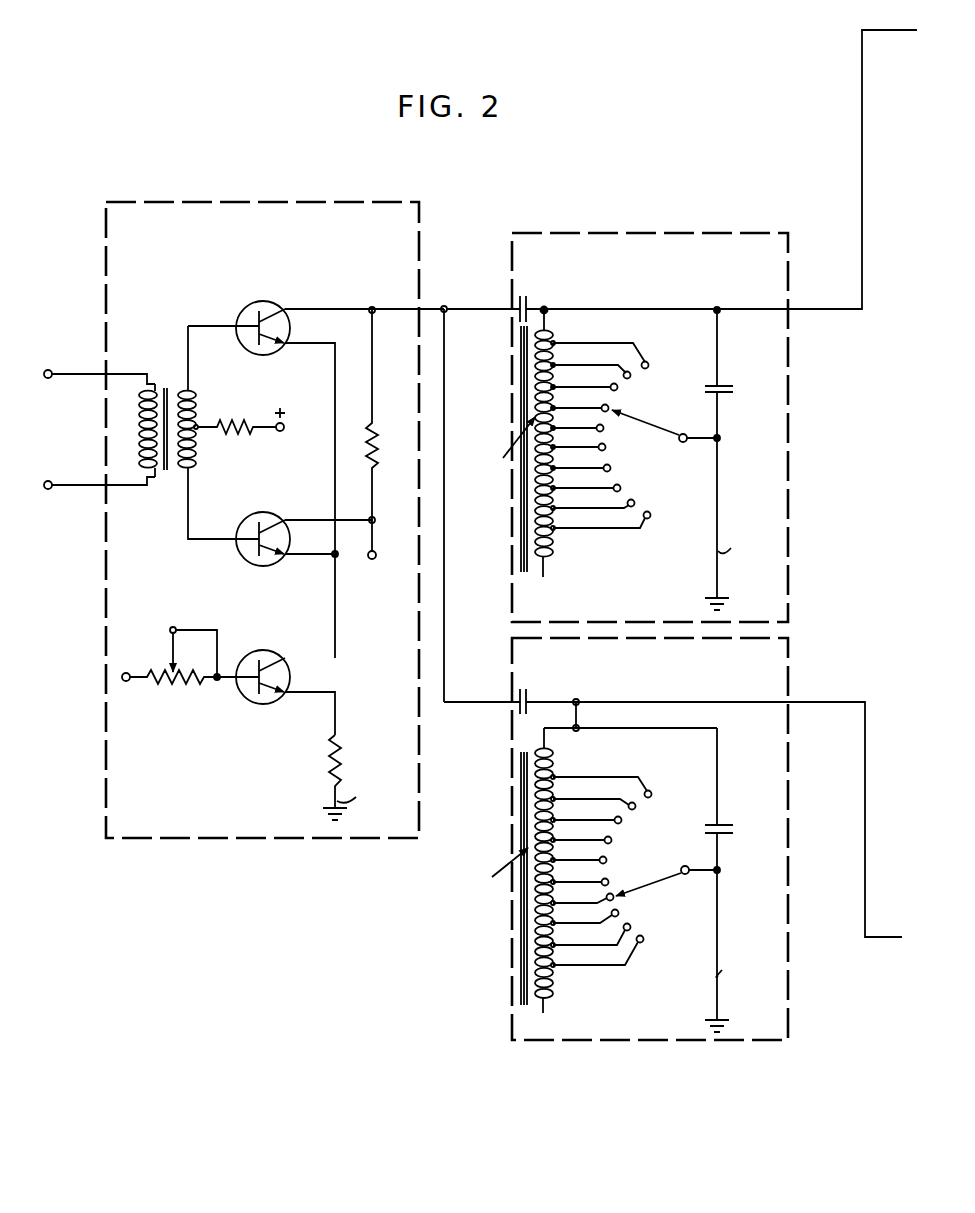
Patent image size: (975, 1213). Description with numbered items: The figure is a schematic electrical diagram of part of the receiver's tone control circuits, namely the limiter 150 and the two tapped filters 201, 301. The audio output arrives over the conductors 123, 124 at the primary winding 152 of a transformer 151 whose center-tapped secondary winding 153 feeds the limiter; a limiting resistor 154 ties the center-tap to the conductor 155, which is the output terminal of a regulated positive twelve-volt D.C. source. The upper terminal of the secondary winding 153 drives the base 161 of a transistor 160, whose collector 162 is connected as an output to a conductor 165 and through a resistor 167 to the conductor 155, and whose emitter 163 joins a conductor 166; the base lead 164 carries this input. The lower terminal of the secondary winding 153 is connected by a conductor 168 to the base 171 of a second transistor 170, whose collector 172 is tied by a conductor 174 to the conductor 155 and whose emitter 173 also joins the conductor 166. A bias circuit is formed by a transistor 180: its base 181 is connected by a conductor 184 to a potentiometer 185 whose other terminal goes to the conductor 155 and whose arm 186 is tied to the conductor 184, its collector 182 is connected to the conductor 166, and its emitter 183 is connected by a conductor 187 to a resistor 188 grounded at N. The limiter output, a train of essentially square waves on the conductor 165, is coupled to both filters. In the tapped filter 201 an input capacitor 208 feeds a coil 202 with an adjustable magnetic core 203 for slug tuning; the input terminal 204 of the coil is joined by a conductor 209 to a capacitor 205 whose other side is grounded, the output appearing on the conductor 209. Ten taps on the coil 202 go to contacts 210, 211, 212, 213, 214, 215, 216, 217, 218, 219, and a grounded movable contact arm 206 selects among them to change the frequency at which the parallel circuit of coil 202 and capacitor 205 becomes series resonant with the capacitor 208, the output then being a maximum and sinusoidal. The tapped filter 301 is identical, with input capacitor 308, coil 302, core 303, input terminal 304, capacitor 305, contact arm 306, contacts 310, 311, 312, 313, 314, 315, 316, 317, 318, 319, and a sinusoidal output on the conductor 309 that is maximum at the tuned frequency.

The conductor 123 is at (86, 362).
The conductor 124 is at (93, 488).
The limiter 150 is at (213, 198).
The transformer 151 is at (148, 411).
The primary winding 152 is at (139, 428).
The secondary winding 153 is at (204, 428).
The limiting resistor 154 is at (246, 436).
The conductor 155 is at (283, 432).
The transistor 160 is at (270, 309).
The base 161 is at (247, 321).
The collector 162 is at (282, 308).
The emitter 163 is at (288, 341).
The base lead 164 is at (192, 326).
The conductor 165 is at (407, 309).
The conductor 166 is at (335, 404).
The resistor 167 is at (380, 449).
The conductor 168 is at (184, 518).
The second transistor 170 is at (269, 535).
The base 171 is at (243, 556).
The collector 172 is at (290, 509).
The emitter 173 is at (288, 545).
The conductor 174 is at (320, 513).
The transistor 180 is at (276, 682).
The base 181 is at (246, 660).
The collector 182 is at (273, 657).
The emitter 183 is at (296, 681).
The conductor 184 is at (227, 687).
The potentiometer 185 is at (178, 689).
The arm 186 is at (170, 632).
The conductor 187 is at (335, 723).
The resistor 188 is at (362, 762).
The tapped filter 201 is at (579, 1028).
The coil 202 is at (537, 941).
The magnetic core 203 is at (521, 910).
The input terminal 204 is at (574, 727).
The capacitor 205 is at (728, 817).
The movable contact arm 206 is at (668, 878).
The input capacitor 208 is at (521, 690).
The conductor 209 is at (632, 728).
The contact 210 is at (651, 792).
The contact 211 is at (636, 806).
The contact 212 is at (622, 821).
The contact 213 is at (612, 841).
The contact 214 is at (607, 861).
The contact 215 is at (608, 883).
The contact 216 is at (614, 899).
The contact 217 is at (619, 915).
The contact 218 is at (631, 929).
The contact 219 is at (643, 942).
The tapped filter 301 is at (691, 231).
The coil 302 is at (536, 516).
The magnetic core 303 is at (521, 382).
The input terminal 304 is at (546, 312).
The capacitor 305 is at (727, 392).
The movable contact arm 306 is at (672, 434).
The input capacitor 308 is at (521, 301).
The conductor 309 is at (648, 310).
The contact 310 is at (648, 361).
The contact 311 is at (631, 375).
The contact 312 is at (618, 388).
The contact 313 is at (610, 408).
The contact 314 is at (604, 431).
The contact 315 is at (607, 449).
The contact 316 is at (612, 470).
The contact 317 is at (622, 490).
The contact 318 is at (636, 505).
The contact 319 is at (651, 517).